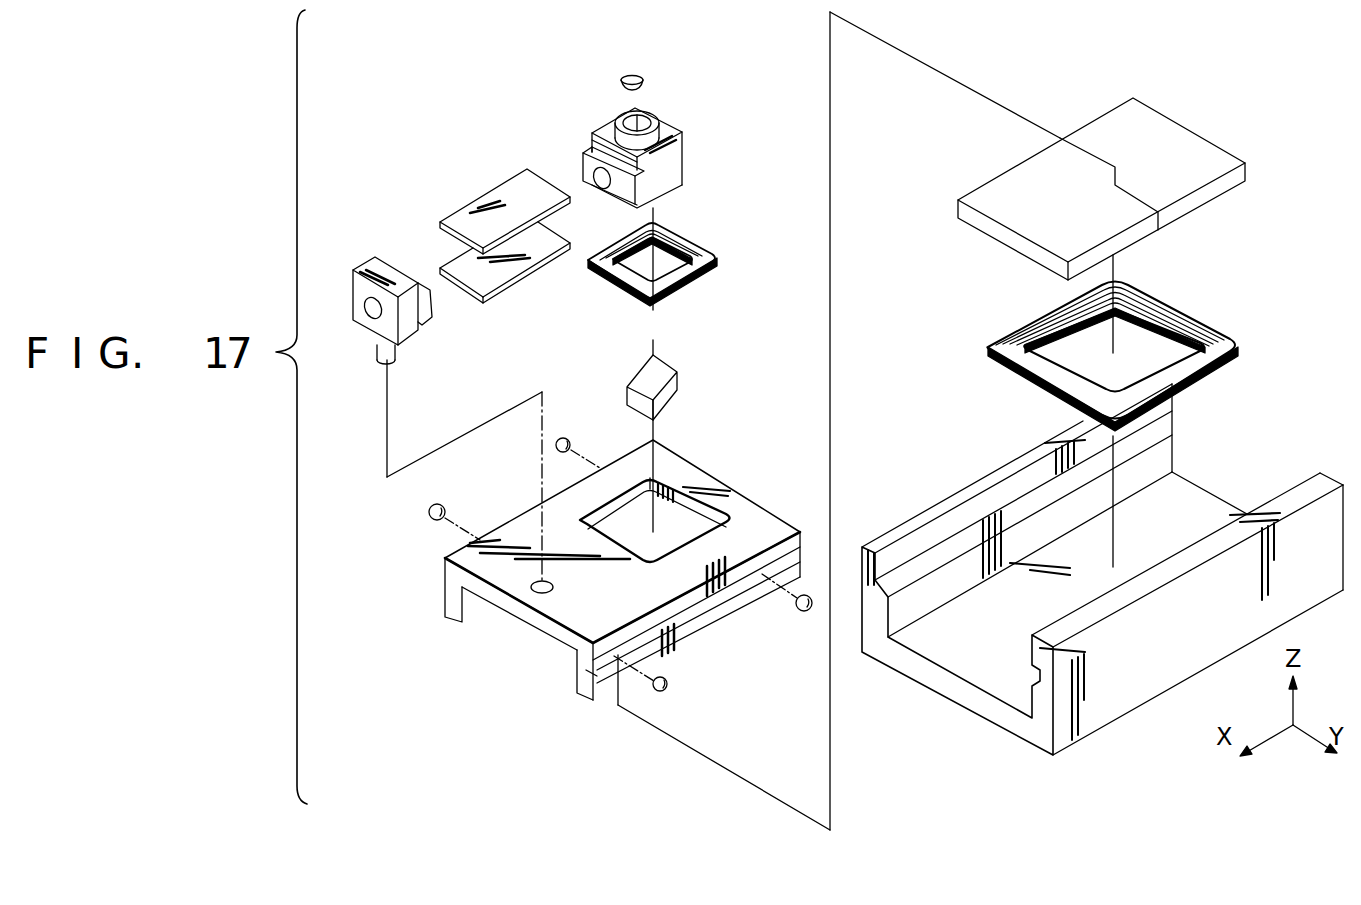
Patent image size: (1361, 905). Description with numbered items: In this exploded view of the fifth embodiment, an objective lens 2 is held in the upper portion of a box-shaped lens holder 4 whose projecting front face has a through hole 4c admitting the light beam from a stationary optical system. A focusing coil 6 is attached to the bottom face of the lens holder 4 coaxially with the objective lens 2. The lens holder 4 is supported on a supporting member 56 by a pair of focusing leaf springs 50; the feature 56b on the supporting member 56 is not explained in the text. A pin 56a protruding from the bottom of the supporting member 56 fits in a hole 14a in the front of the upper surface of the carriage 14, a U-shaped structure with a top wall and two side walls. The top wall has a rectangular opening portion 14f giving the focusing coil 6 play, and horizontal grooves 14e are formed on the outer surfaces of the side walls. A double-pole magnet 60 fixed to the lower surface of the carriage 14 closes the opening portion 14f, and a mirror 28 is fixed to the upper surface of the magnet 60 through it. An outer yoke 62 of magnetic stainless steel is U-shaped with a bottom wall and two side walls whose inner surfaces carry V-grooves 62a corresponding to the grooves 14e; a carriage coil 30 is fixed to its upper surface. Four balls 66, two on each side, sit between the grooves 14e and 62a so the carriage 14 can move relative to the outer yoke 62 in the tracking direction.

The objective lens 2 is at (647, 80).
The lens holder 4 is at (673, 130).
The through hole 4c is at (583, 152).
The focusing coil 6 is at (672, 232).
The carriage 14 is at (770, 519).
The hole 14a is at (532, 594).
The grooves 14e is at (443, 590).
The opening portion 14f is at (668, 518).
The mirror 28 is at (676, 390).
The carriage coil 30 is at (1190, 308).
The focusing leaf springs 50 is at (440, 267).
The supporting member 56 is at (367, 266).
The pin 56a is at (373, 350).
The hole of block 56b is at (368, 307).
The double-pole magnet 60 is at (1206, 137).
The outer yoke 62 is at (926, 691).
The V-grooves 62a is at (920, 566).
The balls 66 is at (795, 635).